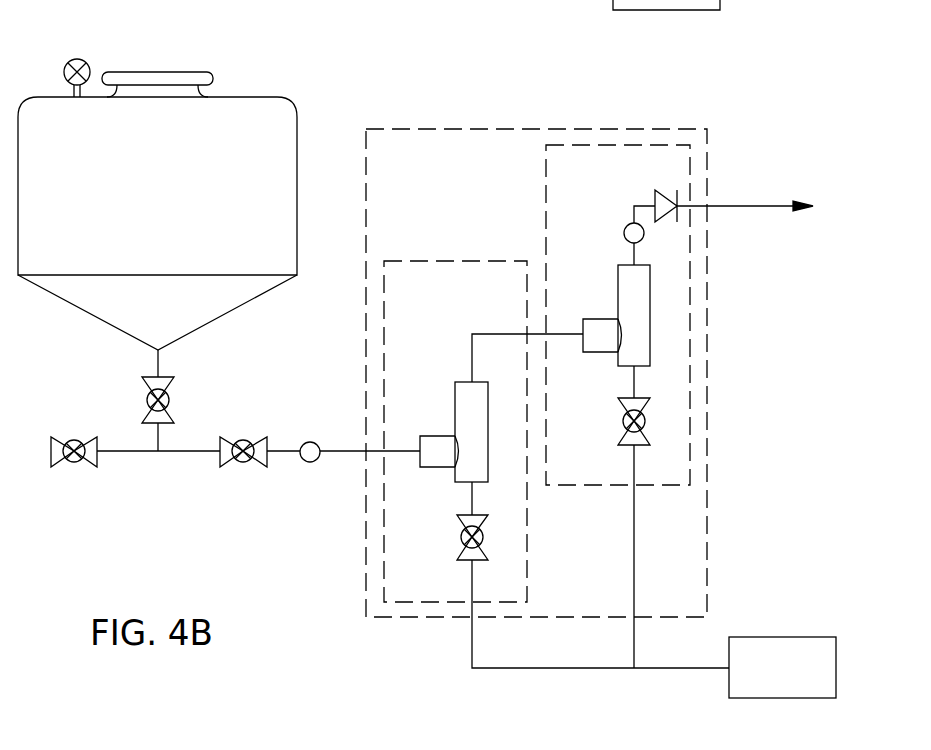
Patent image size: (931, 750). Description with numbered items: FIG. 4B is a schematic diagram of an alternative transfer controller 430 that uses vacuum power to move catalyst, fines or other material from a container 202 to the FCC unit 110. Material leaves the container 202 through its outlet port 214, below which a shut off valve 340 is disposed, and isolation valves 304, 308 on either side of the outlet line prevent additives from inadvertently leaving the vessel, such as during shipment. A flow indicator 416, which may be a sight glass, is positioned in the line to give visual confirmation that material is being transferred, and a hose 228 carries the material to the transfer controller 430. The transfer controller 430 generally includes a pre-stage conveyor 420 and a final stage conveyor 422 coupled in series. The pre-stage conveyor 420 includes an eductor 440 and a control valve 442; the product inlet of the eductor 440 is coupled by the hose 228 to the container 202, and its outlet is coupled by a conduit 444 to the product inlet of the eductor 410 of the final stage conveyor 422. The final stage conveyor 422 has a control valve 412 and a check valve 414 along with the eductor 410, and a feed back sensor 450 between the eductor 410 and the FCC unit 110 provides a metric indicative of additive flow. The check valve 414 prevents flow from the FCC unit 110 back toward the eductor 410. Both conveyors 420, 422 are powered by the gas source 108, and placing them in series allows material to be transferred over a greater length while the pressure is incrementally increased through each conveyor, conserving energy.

The container 202 is at (293, 100).
The outlet port 214 is at (158, 365).
The shut off valve 340 is at (142, 410).
The isolation valve 304 is at (80, 463).
The isolation valve 308 is at (246, 463).
The flow indicator 416 is at (310, 441).
The hose 228 is at (343, 453).
The transfer controller 430 is at (497, 122).
The pre-stage conveyor 420 is at (418, 261).
The final stage conveyor 422 is at (660, 487).
The eductor 440 is at (430, 436).
The conduit 444 is at (495, 334).
The control valve 442 is at (464, 546).
The eductor 410 is at (598, 319).
The control valve 412 is at (627, 397).
The feed back sensor 450 is at (623, 232).
The check valve 414 is at (670, 190).
The FCC unit 110 is at (771, 203).
The gas source 108 is at (807, 679).